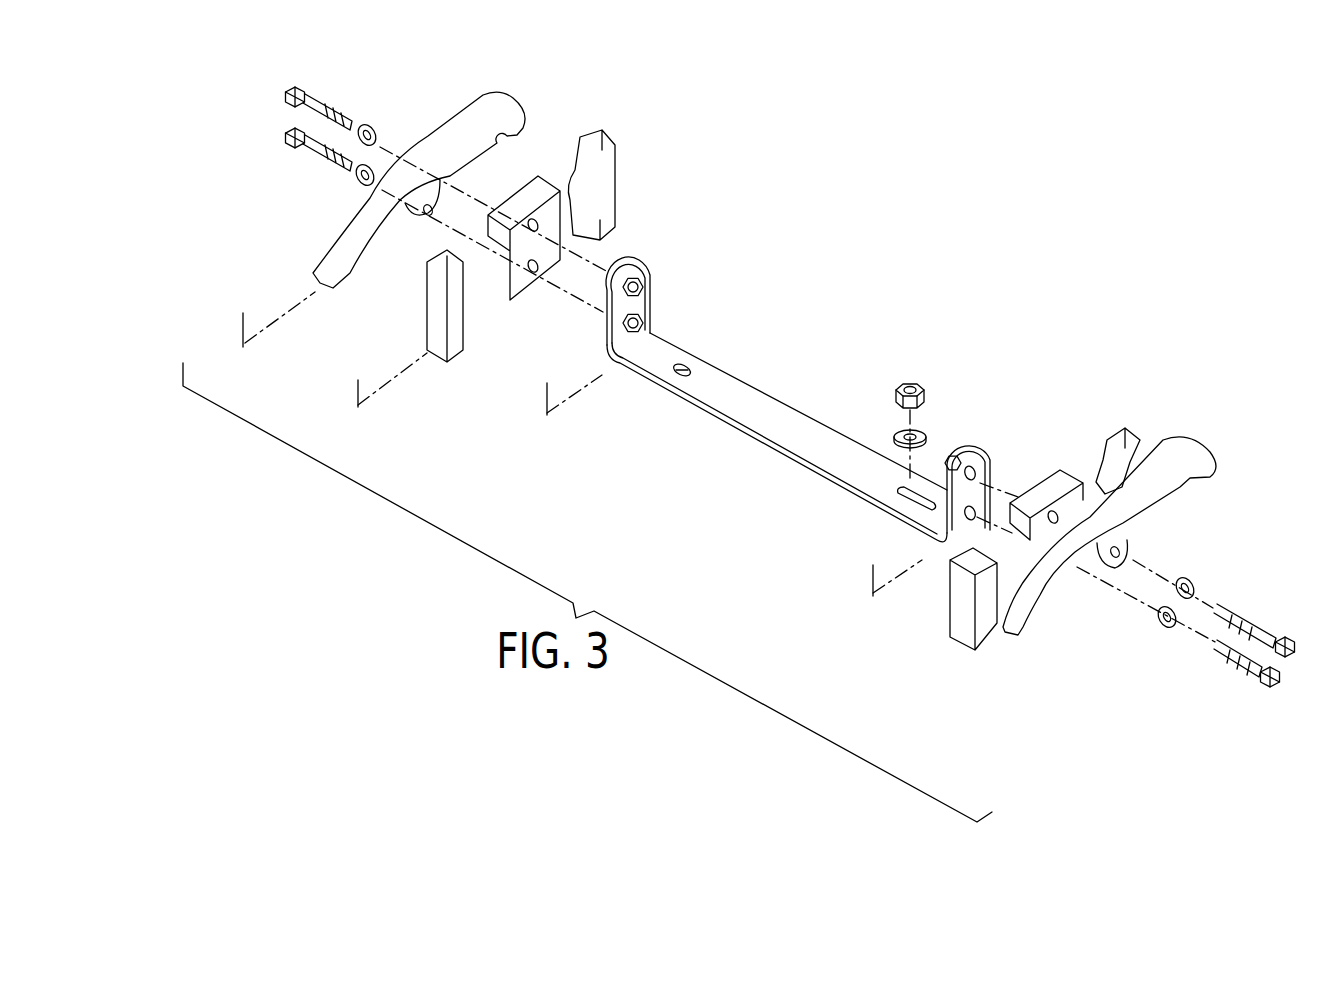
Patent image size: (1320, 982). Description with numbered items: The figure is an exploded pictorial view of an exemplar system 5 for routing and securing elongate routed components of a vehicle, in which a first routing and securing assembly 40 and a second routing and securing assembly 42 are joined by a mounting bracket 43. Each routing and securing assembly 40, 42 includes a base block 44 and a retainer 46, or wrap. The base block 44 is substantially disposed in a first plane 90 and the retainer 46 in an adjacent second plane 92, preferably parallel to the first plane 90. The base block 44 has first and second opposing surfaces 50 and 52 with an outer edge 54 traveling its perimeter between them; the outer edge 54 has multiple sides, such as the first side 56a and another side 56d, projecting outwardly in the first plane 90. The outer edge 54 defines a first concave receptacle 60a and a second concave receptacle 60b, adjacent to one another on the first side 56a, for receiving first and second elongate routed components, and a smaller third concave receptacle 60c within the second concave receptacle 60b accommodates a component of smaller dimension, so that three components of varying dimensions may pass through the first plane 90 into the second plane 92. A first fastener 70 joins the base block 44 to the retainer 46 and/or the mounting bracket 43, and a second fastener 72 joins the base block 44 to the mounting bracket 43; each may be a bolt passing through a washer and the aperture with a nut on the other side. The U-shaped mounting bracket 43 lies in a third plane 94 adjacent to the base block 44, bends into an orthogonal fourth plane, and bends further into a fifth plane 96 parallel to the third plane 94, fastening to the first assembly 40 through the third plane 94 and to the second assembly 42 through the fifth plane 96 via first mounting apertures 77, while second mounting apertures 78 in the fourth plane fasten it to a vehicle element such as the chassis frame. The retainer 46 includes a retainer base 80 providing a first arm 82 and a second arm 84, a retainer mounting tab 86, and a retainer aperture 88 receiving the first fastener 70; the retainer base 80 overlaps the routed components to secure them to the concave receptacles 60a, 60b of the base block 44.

The system 5 is at (1197, 214).
The first routing and securing assembly 40 is at (688, 98).
The second routing and securing assembly 42 is at (1174, 403).
The mounting bracket 43 is at (762, 362).
The base block 44 is at (608, 183).
The retainer 46 is at (510, 103).
The first opposing surface 50 is at (522, 282).
The second opposing surface 52 is at (957, 616).
The outer edge 54 is at (455, 340).
The first side 56a is at (580, 222).
The side 56d is at (465, 342).
The first concave receptacle 60a is at (473, 268).
The second concave receptacle 60b is at (563, 160).
The third concave receptacle 60c is at (578, 232).
The first fastener 70 is at (330, 107).
The second fastener 72 is at (322, 157).
The first mounting apertures 77 is at (650, 323).
The second mounting apertures 78 is at (683, 376).
The retainer base 80 is at (429, 137).
The first arm 82 is at (343, 268).
The second arm 84 is at (530, 120).
The retainer mounting tab 86 is at (445, 203).
The retainer aperture 88 is at (420, 216).
The first plane 90 is at (352, 403).
The second plane 92 is at (236, 343).
The third plane 94 is at (545, 431).
The fifth plane 96 is at (876, 600).